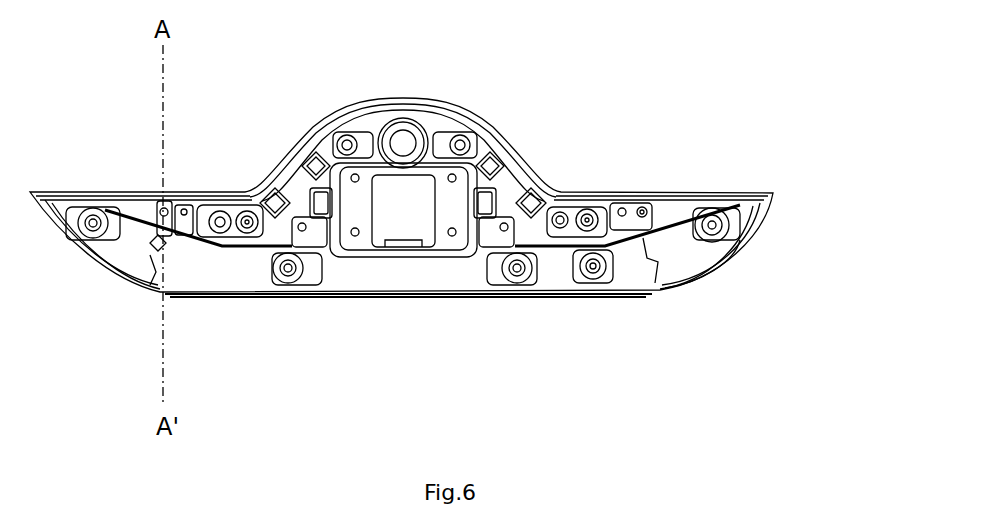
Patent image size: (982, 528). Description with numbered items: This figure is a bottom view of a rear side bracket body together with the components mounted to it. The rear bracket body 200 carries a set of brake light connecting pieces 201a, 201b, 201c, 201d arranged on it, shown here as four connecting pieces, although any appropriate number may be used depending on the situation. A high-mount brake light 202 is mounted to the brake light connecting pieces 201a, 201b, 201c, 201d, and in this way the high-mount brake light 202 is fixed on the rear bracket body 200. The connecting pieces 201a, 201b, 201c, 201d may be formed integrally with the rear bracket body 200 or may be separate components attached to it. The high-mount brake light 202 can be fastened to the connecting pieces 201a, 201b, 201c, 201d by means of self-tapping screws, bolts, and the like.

The rear bracket body 200 is at (763, 193).
The brake light connecting piece 201a is at (155, 205).
The brake light connecting piece 201b is at (267, 183).
The brake light connecting piece 201c is at (563, 193).
The brake light connecting piece 201d is at (657, 195).
The high-mount brake light 202 is at (677, 257).